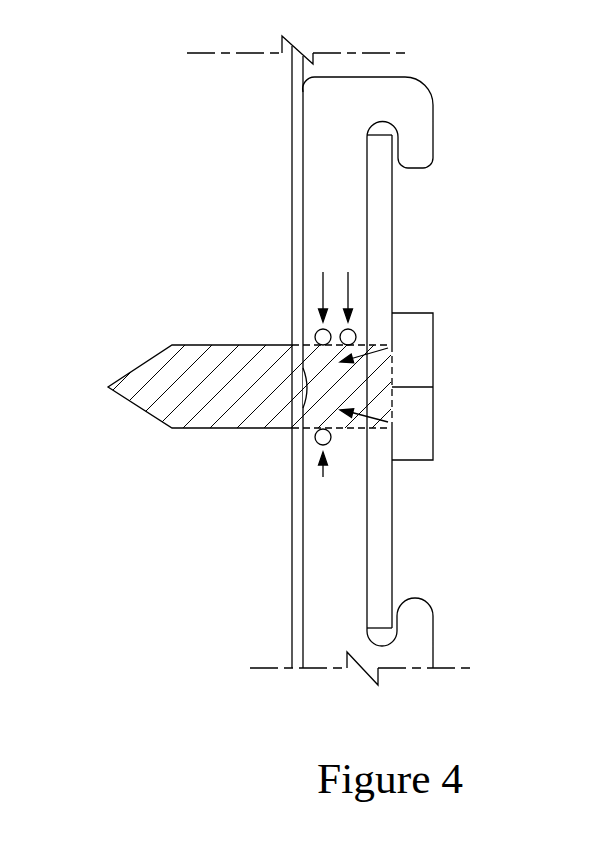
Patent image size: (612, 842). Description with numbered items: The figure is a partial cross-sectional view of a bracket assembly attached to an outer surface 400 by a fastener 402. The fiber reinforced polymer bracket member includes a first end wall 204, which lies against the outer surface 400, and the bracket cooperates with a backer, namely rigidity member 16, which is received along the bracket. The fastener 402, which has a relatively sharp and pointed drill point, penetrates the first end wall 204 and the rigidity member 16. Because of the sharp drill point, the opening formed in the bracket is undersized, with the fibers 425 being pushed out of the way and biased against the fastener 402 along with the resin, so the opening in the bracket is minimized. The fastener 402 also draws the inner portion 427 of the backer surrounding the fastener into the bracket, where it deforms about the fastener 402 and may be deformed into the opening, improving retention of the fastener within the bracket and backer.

The outer surface 400 is at (282, 162).
The first end wall 204 is at (436, 77).
The rigidity member 16 is at (405, 558).
The fastener 402 is at (130, 355).
The fibers 425 is at (315, 337).
The inner portion 427 is at (392, 343).